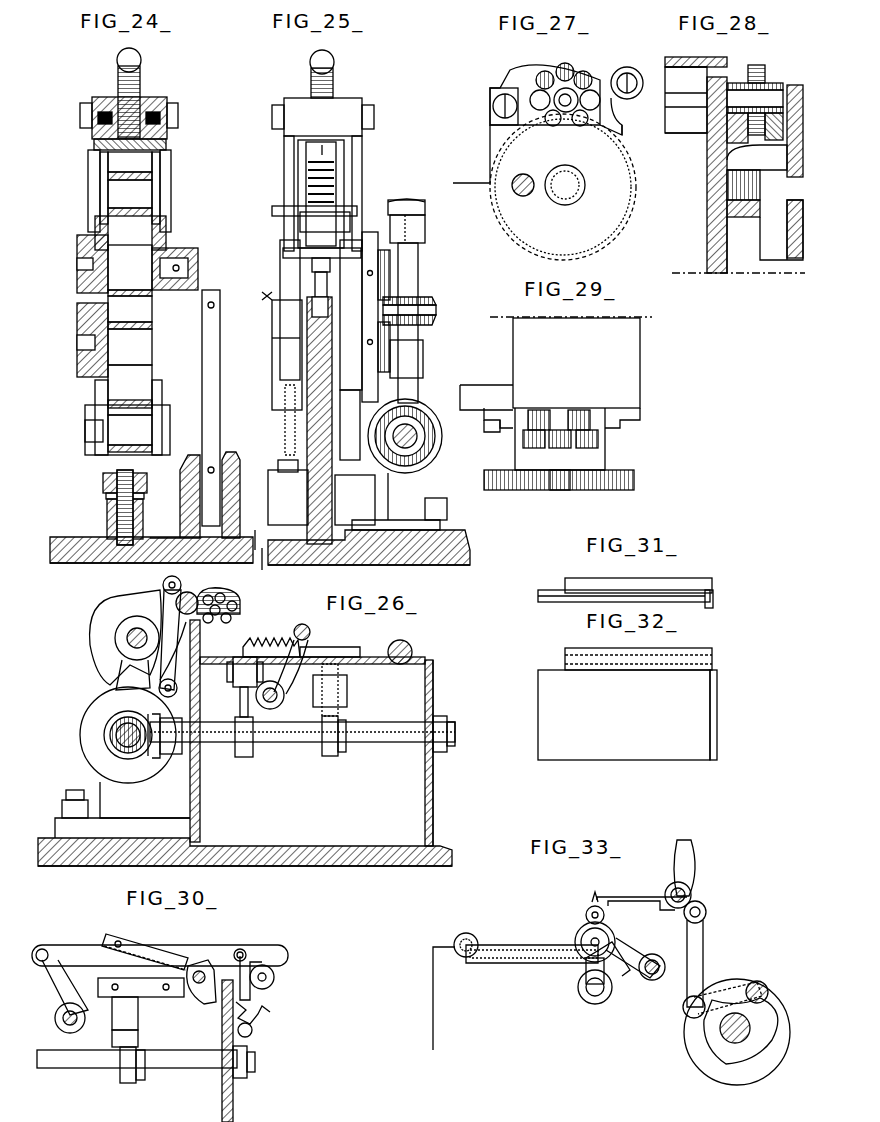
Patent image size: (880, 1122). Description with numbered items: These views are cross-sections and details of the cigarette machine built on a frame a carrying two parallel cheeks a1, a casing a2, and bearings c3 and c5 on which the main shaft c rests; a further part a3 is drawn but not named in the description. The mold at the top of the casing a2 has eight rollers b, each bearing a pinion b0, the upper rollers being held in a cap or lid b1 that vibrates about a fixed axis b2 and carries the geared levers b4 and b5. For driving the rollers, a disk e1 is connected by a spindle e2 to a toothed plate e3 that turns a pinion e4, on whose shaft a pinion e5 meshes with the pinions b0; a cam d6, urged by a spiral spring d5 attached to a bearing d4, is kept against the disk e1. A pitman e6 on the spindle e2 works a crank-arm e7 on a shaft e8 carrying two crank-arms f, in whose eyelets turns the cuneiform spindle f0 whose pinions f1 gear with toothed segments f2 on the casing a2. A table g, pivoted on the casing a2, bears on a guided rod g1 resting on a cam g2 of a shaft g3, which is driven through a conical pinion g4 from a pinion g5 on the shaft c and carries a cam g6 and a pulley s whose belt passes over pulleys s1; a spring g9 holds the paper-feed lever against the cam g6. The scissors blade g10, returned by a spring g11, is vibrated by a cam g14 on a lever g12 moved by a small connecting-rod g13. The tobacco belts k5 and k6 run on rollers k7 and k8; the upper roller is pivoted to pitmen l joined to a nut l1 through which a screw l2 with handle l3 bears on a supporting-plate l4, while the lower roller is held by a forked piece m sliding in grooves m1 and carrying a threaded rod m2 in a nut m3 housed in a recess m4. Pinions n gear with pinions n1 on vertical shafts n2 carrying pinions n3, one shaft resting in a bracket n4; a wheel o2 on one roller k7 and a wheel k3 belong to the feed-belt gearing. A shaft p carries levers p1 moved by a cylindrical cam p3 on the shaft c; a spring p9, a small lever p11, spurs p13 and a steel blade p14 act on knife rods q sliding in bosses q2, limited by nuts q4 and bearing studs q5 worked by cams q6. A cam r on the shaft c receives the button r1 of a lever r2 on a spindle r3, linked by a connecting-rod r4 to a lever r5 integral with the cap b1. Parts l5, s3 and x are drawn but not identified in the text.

In FIG. 24, the frame a is at (50, 554).
In FIG. 25, the frame a is at (470, 550).
In FIG. 26, the frame a is at (90, 838).
In FIG. 25, the parallel cheeks a1 is at (298, 178).
In FIG. 27, the casing a2 is at (462, 183).
In FIG. 28, the casing a2 is at (707, 230).
In FIG. 26, the casing a2 is at (200, 790).
In FIG. 30, the casing a2 is at (233, 1106).
In FIG. 33, the casing a2 is at (433, 1020).
In FIG. 26, the end wall a3 is at (433, 690).
In FIG. 28, the rollers b is at (686, 100).
In FIG. 26, the rollers b is at (225, 612).
In FIG. 27, the cap or lid b1 is at (532, 70).
In FIG. 28, the cap or lid b1 is at (690, 56).
In FIG. 29, the cap or lid b1 is at (571, 362).
In FIG. 26, the cap or lid b1 is at (230, 596).
In FIG. 33, the cap or lid b1 is at (690, 866).
In FIG. 27, the pinion b0 is at (570, 76).
In FIG. 28, the pinion b0 is at (770, 100).
In FIG. 29, the pinion b0 is at (574, 412).
In FIG. 27, the fixed axis b2 is at (640, 70).
In FIG. 29, the fixed axis b2 is at (640, 380).
In FIG. 26, the lever b4 is at (176, 600).
In FIG. 27, the lever b5 is at (622, 130).
In FIG. 28, the lever b5 is at (745, 143).
In FIG. 29, the lever b5 is at (615, 432).
In FIG. 33, the lever b5 is at (691, 889).
In FIG. 25, the main shaft c is at (417, 440).
In FIG. 26, the main shaft c is at (128, 718).
In FIG. 33, the main shaft c is at (732, 1043).
In FIG. 26, the bearing c3 is at (126, 800).
In FIG. 25, the bearing c5 is at (399, 501).
In FIG. 26, the bearing d4 is at (133, 675).
In FIG. 26, the spiral spring d5 is at (139, 637).
In FIG. 26, the cam d6 is at (90, 645).
In FIG. 26, the disk e1 is at (184, 660).
In FIG. 27, the spindle e2 is at (523, 196).
In FIG. 33, the spindle e2 is at (658, 955).
In FIG. 27, the toothed plate e3 is at (580, 240).
In FIG. 28, the toothed plate e3 is at (786, 238).
In FIG. 29, the toothed plate e3 is at (634, 480).
In FIG. 27, the pinion e4 is at (560, 108).
In FIG. 28, the pinion e4 is at (795, 85).
In FIG. 29, the pinion e4 is at (556, 492).
In FIG. 28, the pinion e5 is at (742, 84).
In FIG. 33, the pitman e6 is at (630, 972).
In FIG. 33, the crank-arm e7 is at (586, 964).
In FIG. 26, the shaft e8 is at (272, 709).
In FIG. 30, the shaft e8 is at (52, 1018).
In FIG. 33, the shaft e8 is at (594, 1004).
In FIG. 26, the crank-arms f is at (284, 680).
In FIG. 30, the crank-arms f is at (58, 986).
In FIG. 33, the pinions f1 is at (586, 912).
In FIG. 26, the spindle f0 is at (310, 632).
In FIG. 33, the spindle f0 is at (588, 906).
In FIG. 26, the toothed segments f2 is at (275, 630).
In FIG. 33, the toothed segments f2 is at (575, 932).
In FIG. 31, the table g is at (538, 596).
In FIG. 32, the table g is at (625, 704).
In FIG. 26, the table g is at (380, 652).
In FIG. 30, the table g is at (106, 984).
In FIG. 33, the table g is at (508, 963).
In FIG. 26, the guided rod g1 is at (347, 700).
In FIG. 30, the guided rod g1 is at (120, 1034).
In FIG. 26, the cam g2 is at (330, 756).
In FIG. 30, the cam g2 is at (128, 1083).
In FIG. 26, the shaft g3 is at (305, 738).
In FIG. 30, the shaft g3 is at (62, 1060).
In FIG. 26, the conical pinion g4 is at (146, 756).
In FIG. 26, the pinion g5 is at (104, 732).
In FIG. 26, the cam g6 is at (455, 734).
In FIG. 30, the cam g6 is at (255, 1068).
In FIG. 31, the opposing spring g9 is at (713, 598).
In FIG. 32, the opposing spring g9 is at (717, 712).
In FIG. 30, the opposing spring g9 is at (160, 996).
In FIG. 30, the blade of the scissors g10 is at (120, 932).
In FIG. 30, the spring g11 is at (284, 1006).
In FIG. 30, the lever g12 is at (250, 972).
In FIG. 30, the small connecting-rod g13 is at (65, 950).
In FIG. 30, the cam g14 is at (274, 984).
In FIG. 24, the wheel k3 is at (52, 322).
In FIG. 24, the endless belt k5 is at (130, 224).
In FIG. 24, the endless belt k6 is at (130, 374).
In FIG. 24, the rollers k7 is at (130, 198).
In FIG. 24, the rollers k8 is at (130, 372).
In FIG. 24, the small pitmen l is at (88, 160).
In FIG. 25, the small pitmen l is at (284, 152).
In FIG. 24, the nut l1 is at (160, 100).
In FIG. 25, the nut l1 is at (323, 117).
In FIG. 24, the screw l2 is at (118, 82).
In FIG. 25, the screw l2 is at (311, 80).
In FIG. 24, the operating-handle l3 is at (141, 57).
In FIG. 25, the operating-handle l3 is at (334, 58).
In FIG. 24, the supporting-plate l4 is at (95, 143).
In FIG. 25, the supporting-plate l4 is at (322, 150).
In FIG. 24, the guide strip l5 is at (100, 174).
In FIG. 24, the forked piece m is at (85, 422).
In FIG. 24, the grooves m1 is at (95, 390).
In FIG. 24, the screw-threaded rod m2 is at (107, 525).
In FIG. 24, the nut m3 is at (103, 480).
In FIG. 24, the recess m4 is at (104, 494).
In FIG. 24, the toothed pinion n is at (195, 258).
In FIG. 25, the toothed pinion n is at (390, 266).
In FIG. 25, the pinion n1 is at (436, 302).
In FIG. 24, the vertical shafts n2 is at (213, 408).
In FIG. 25, the vertical shafts n2 is at (425, 276).
In FIG. 24, the pinions n3 is at (231, 458).
In FIG. 25, the pinions n3 is at (440, 425).
In FIG. 24, the bracket n4 is at (182, 515).
In FIG. 24, the wheel o2 is at (77, 248).
In FIG. 25, the shaft p is at (288, 497).
In FIG. 25, the levers p1 is at (355, 500).
In FIG. 25, the cylindrical cam p3 is at (430, 450).
In FIG. 25, the opposing spring p9 is at (325, 223).
In FIG. 25, the small lever p11 is at (272, 210).
In FIG. 25, the spurs p13 is at (283, 250).
In FIG. 25, the steel blade p14 is at (315, 284).
In FIG. 25, the rods q is at (321, 315).
In FIG. 25, the cylindrical bosses q2 is at (285, 448).
In FIG. 25, the nuts q4 is at (278, 470).
In FIG. 25, the studs q5 is at (272, 342).
In FIG. 25, the cams q6 is at (274, 316).
In FIG. 26, the cam r is at (82, 724).
In FIG. 33, the cam r is at (690, 1060).
In FIG. 33, the button r1 is at (735, 994).
In FIG. 33, the lever r2 is at (741, 1031).
In FIG. 33, the spindle r3 is at (764, 984).
In FIG. 26, the small connecting-rod r4 is at (124, 604).
In FIG. 33, the small connecting-rod r4 is at (703, 944).
In FIG. 26, the lever r5 is at (181, 582).
In FIG. 33, the lever r5 is at (706, 910).
In FIG. 26, the pulley s is at (253, 750).
In FIG. 26, the pulley s1 is at (233, 676).
In FIG. 26, the stem s3 is at (240, 700).
In FIG. 33, the connection x is at (625, 897).